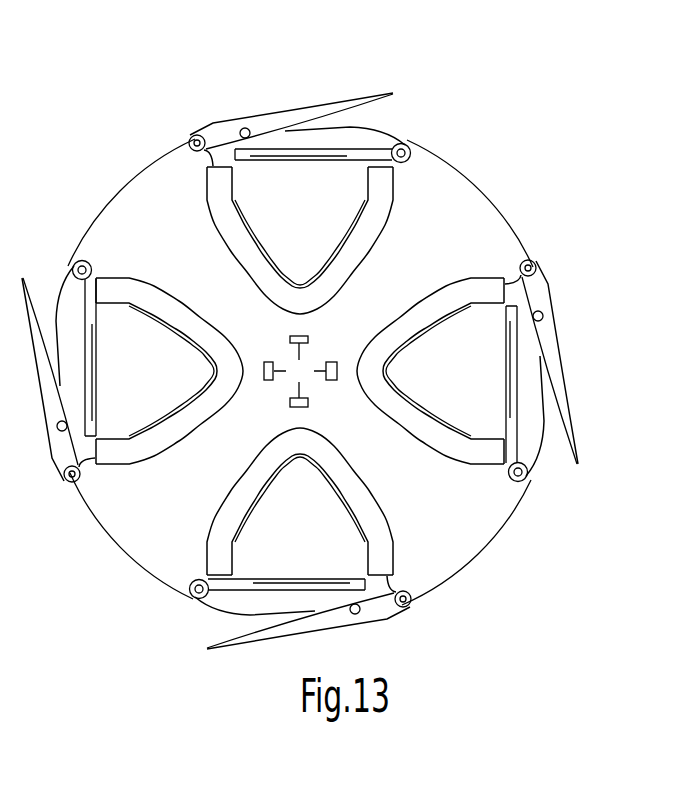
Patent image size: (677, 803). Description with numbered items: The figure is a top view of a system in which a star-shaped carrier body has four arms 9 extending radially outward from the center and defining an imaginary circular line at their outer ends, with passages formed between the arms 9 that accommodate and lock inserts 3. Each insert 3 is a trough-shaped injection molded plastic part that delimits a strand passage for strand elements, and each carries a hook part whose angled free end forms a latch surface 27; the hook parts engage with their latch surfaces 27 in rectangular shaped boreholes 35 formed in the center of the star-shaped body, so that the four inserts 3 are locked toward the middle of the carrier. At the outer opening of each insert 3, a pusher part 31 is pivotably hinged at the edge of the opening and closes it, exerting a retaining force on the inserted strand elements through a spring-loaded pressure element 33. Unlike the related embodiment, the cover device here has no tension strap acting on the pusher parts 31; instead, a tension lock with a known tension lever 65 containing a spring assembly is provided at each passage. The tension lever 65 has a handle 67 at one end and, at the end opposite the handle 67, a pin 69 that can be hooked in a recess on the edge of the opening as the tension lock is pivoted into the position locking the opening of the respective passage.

The insert 3 is at (253, 285).
The arms 9 is at (160, 177).
The latch surface 27 is at (308, 337).
The pusher part 31 is at (318, 143).
The spring-loaded pressure element 33 is at (268, 162).
The boreholes 35 is at (300, 370).
The tension lever 65 is at (273, 112).
The handle 67 is at (365, 100).
The pin 69 is at (195, 138).